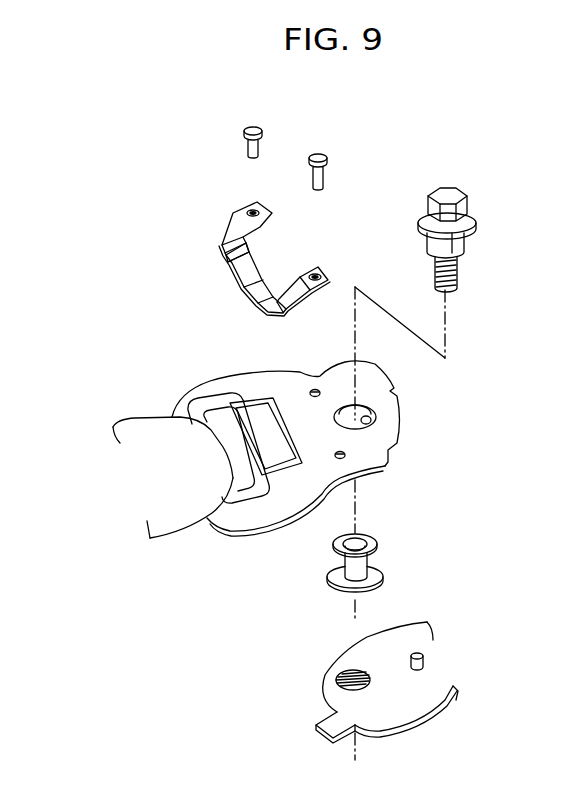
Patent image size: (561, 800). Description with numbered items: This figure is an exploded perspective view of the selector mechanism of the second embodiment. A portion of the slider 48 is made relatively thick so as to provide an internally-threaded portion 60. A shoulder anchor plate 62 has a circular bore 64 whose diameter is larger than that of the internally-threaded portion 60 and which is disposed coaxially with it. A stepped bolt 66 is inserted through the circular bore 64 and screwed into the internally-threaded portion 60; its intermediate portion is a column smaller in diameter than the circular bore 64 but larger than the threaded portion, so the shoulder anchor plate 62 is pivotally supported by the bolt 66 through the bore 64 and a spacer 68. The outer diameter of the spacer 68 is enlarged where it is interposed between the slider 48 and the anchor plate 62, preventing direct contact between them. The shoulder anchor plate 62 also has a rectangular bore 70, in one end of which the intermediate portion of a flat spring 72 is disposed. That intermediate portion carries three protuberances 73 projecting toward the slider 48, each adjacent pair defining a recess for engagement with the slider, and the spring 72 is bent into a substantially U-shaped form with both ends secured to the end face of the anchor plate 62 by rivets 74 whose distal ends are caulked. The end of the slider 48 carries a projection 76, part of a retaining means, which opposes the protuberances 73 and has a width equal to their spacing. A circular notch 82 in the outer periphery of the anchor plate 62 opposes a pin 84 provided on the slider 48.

The slider 48 is at (435, 730).
The internally-threaded portion 60 is at (360, 674).
The shoulder anchor plate 62 is at (213, 380).
The circular bore 64 is at (378, 421).
The stepped bolt 66 is at (458, 188).
The spacer 68 is at (380, 542).
The rectangular bore 70 is at (261, 405).
The flat spring 72 is at (227, 221).
The protuberances 73 is at (222, 262).
The rivets 74 is at (258, 127).
The projection 76 is at (324, 722).
The circular notch 82 is at (388, 455).
The pin 84 is at (425, 657).